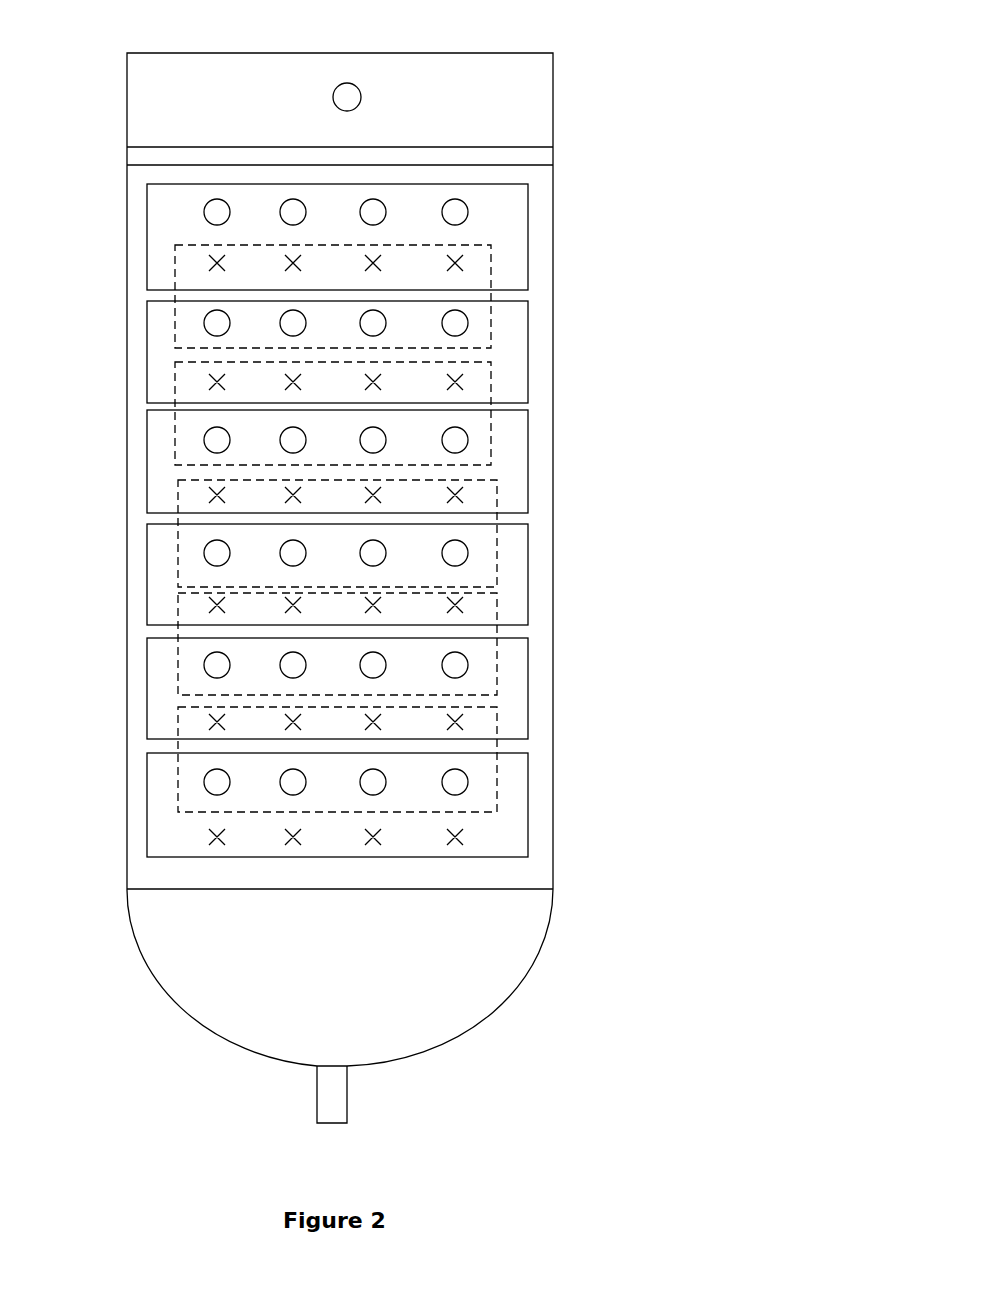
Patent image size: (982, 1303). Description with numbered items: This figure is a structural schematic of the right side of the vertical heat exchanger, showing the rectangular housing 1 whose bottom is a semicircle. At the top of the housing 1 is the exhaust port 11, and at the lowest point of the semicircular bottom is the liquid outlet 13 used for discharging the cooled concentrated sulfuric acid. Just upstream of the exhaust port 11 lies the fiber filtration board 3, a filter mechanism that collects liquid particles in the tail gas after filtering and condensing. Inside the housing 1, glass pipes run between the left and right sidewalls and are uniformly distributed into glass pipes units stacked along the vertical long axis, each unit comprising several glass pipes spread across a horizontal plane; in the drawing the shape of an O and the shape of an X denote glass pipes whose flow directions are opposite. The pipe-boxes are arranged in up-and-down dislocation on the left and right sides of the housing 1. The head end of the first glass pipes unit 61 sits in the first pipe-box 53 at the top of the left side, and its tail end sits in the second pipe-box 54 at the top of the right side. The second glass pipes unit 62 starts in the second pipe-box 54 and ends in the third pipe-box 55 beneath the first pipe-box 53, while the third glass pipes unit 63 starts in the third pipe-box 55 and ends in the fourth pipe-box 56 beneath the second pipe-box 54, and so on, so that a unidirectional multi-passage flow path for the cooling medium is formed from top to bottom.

The housing 1 is at (553, 95).
The fiber filtration board 3 is at (530, 157).
The exhaust port 11 is at (352, 98).
The liquid outlet 13 is at (333, 1101).
The first pipe-box 53 is at (176, 349).
The second pipe-box 54 is at (528, 228).
The third pipe-box 55 is at (176, 462).
The fourth pipe-box 56 is at (528, 390).
The first glass pipes unit 61 is at (195, 207).
The second glass pipes unit 62 is at (199, 260).
The third glass pipes unit 63 is at (478, 329).